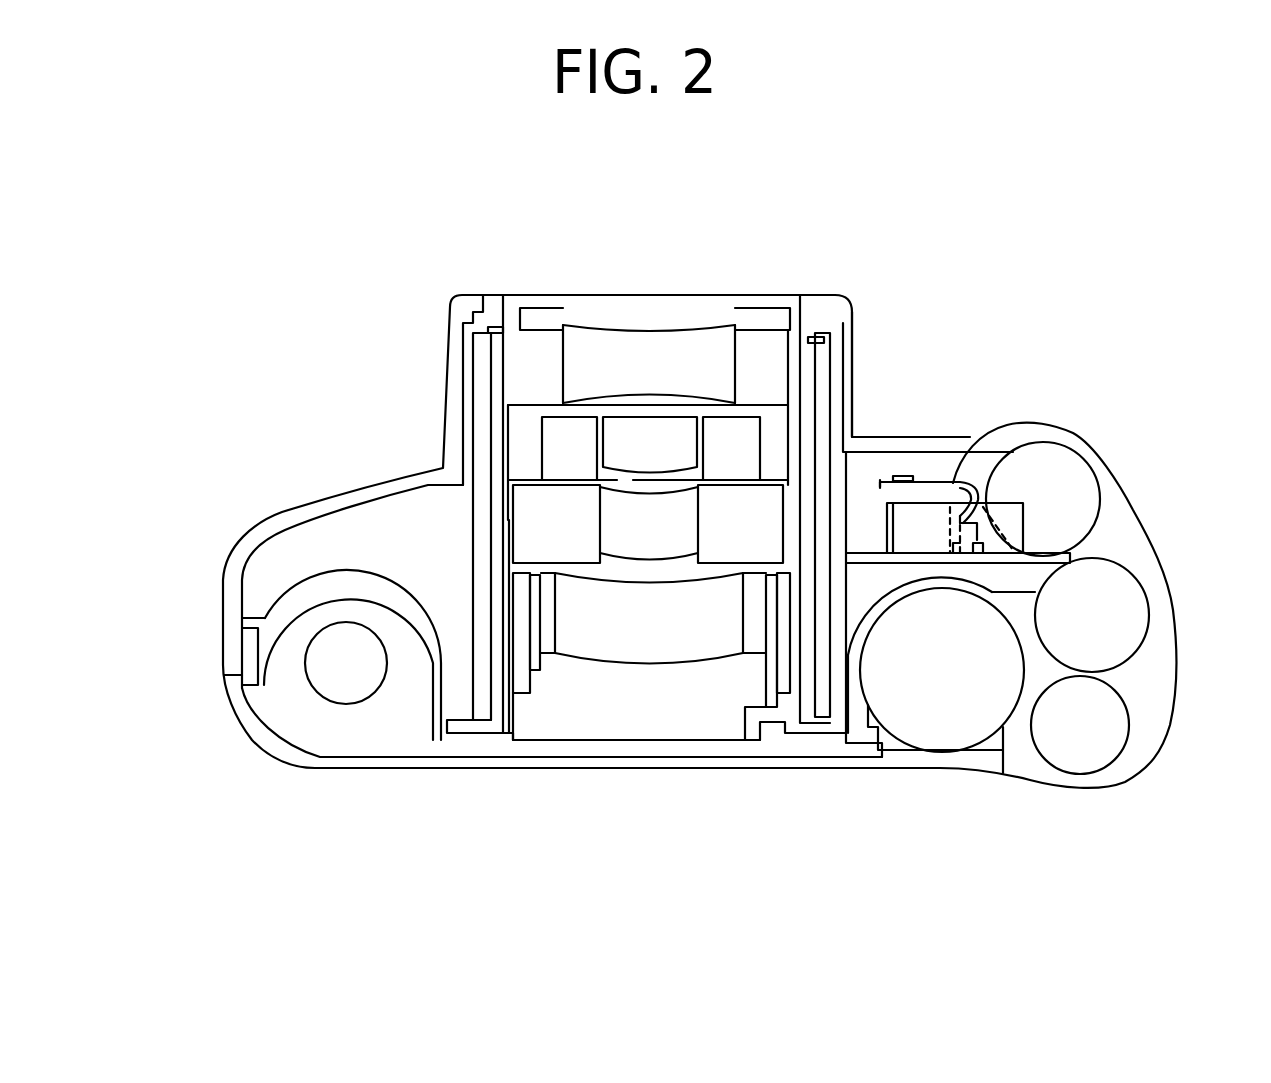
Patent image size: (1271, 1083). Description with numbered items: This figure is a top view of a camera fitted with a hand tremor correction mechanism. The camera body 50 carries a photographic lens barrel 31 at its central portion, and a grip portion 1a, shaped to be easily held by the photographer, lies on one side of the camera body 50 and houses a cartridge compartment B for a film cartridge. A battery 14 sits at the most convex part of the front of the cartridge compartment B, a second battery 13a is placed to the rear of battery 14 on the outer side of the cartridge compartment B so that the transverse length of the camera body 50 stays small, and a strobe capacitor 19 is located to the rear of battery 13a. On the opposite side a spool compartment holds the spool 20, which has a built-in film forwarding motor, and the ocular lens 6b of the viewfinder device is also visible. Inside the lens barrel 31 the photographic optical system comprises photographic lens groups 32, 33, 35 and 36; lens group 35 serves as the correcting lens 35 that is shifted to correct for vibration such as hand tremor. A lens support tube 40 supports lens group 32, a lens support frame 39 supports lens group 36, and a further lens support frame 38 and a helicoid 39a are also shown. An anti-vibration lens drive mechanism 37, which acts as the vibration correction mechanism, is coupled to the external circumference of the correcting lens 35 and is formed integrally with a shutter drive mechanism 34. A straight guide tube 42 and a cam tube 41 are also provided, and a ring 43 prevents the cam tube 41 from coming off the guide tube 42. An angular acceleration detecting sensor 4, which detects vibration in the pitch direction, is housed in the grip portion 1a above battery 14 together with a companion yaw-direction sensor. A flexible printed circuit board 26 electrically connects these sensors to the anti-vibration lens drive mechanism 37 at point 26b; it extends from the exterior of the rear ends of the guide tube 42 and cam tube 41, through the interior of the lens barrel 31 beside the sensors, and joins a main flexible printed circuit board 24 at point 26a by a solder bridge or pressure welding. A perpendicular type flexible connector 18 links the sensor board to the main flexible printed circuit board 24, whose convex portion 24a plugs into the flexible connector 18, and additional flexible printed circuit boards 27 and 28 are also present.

The grip portion 1a is at (1127, 481).
The angular acceleration detecting sensor 4 is at (1003, 510).
The ocular lens 6b is at (425, 768).
The battery 13a is at (1130, 603).
The battery 14 is at (1067, 463).
The flexible connector 18 is at (970, 538).
The strobe capacitor 19 is at (1120, 728).
The spool 20 is at (355, 694).
The main flexible printed circuit board 24 is at (900, 478).
The convex portion 24a is at (970, 510).
The flexible printed circuit board 26 is at (802, 723).
The connection point 26a is at (887, 473).
The connection point 26b is at (787, 510).
The flexible printed circuit board 27 is at (745, 707).
The flexible printed circuit board 28 is at (768, 707).
The photographic lens barrel 31 is at (866, 298).
The photographic lens group 32 is at (590, 325).
The photographic lens group 33 is at (617, 427).
The shutter drive mechanism 34 is at (570, 440).
The correcting lens 35 is at (670, 510).
The photographic lens group 36 is at (667, 660).
The anti-vibration lens drive mechanism 37 is at (750, 515).
The lens support frame 38 is at (520, 692).
The lens support frame 39 is at (532, 672).
The helicoid 39a is at (541, 645).
The lens support tube 40 is at (513, 368).
The cam tube 41 is at (843, 322).
The straight guide tube 42 is at (812, 397).
The ring 43 is at (823, 340).
The camera body 50 is at (255, 523).
The cartridge compartment B is at (935, 737).